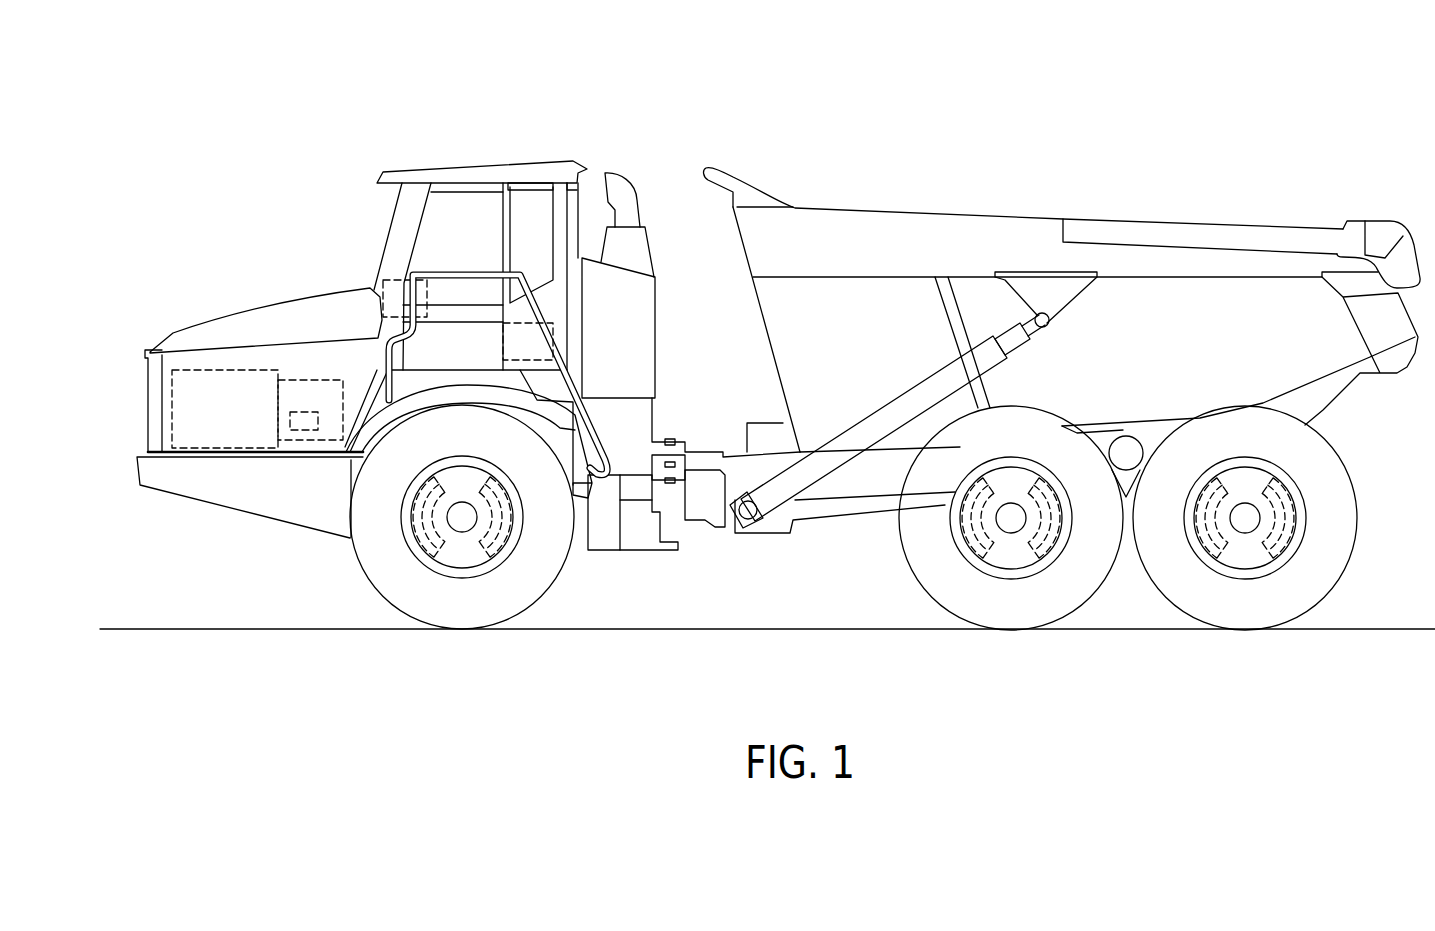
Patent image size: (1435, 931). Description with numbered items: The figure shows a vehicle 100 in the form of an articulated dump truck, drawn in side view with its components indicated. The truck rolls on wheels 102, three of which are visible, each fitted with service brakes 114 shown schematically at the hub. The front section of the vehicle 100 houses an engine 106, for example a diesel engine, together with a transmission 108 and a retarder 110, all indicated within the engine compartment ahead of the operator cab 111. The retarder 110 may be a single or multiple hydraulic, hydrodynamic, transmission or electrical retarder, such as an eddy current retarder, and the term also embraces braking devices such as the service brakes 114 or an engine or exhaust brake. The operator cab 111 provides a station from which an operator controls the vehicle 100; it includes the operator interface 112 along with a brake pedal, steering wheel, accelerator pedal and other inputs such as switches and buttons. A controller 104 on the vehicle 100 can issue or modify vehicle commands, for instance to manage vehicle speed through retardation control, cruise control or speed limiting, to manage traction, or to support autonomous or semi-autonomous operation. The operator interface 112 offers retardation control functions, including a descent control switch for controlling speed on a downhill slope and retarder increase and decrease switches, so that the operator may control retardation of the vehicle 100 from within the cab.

The vehicle 100 is at (213, 119).
The wheels 102 is at (460, 595).
The controller 104 is at (522, 323).
The engine 106 is at (196, 364).
The transmission 108 is at (320, 442).
The retarder 110 is at (298, 436).
The operator cab 111 is at (597, 168).
The operator interface 112 is at (405, 280).
The service brakes 114 is at (518, 540).